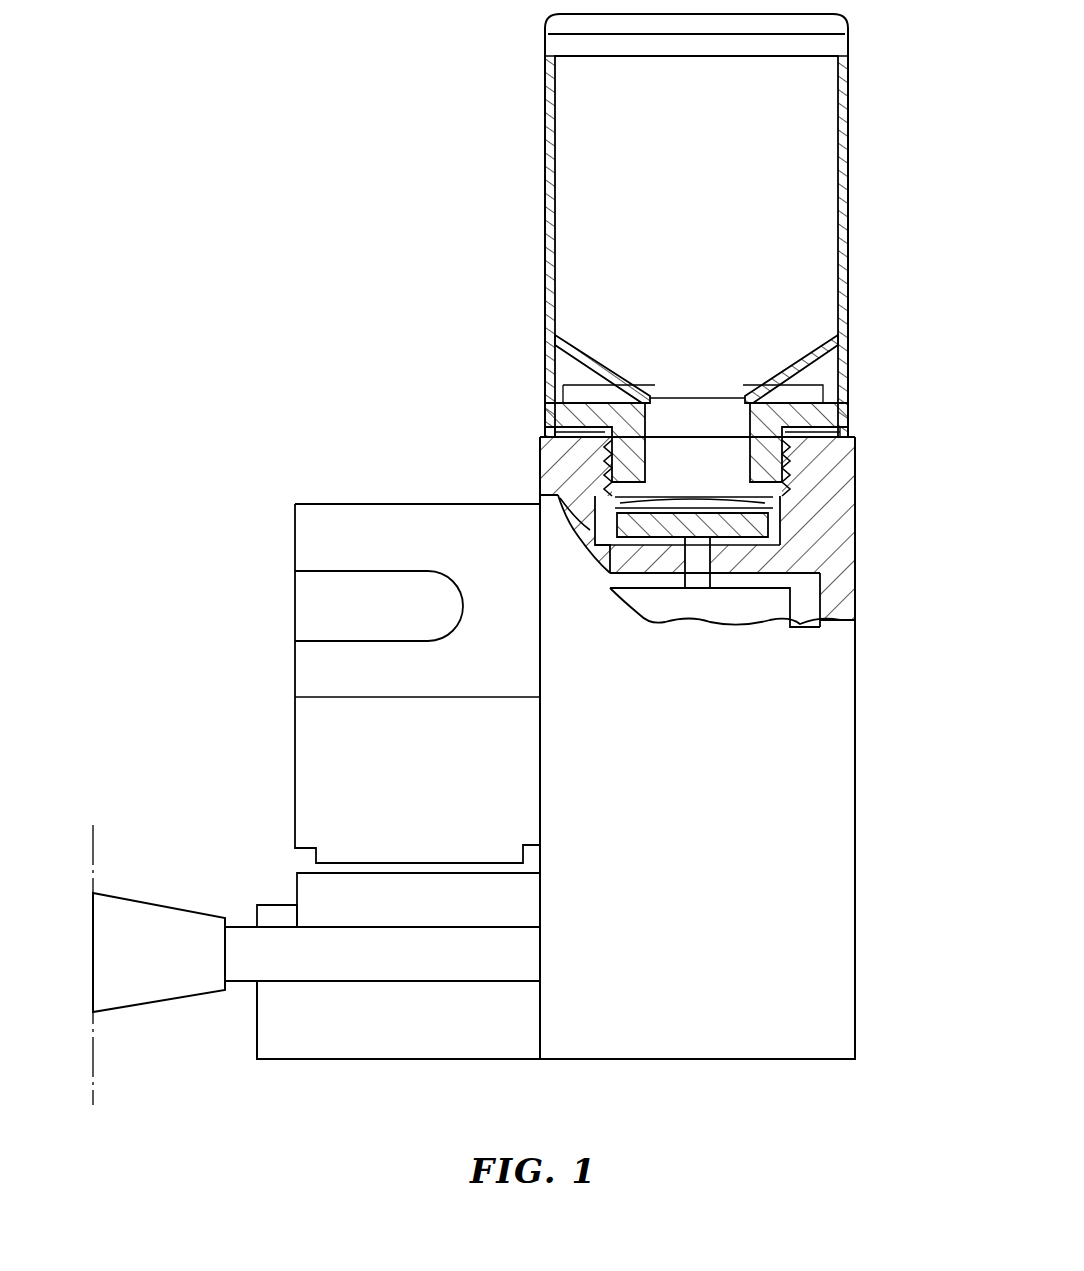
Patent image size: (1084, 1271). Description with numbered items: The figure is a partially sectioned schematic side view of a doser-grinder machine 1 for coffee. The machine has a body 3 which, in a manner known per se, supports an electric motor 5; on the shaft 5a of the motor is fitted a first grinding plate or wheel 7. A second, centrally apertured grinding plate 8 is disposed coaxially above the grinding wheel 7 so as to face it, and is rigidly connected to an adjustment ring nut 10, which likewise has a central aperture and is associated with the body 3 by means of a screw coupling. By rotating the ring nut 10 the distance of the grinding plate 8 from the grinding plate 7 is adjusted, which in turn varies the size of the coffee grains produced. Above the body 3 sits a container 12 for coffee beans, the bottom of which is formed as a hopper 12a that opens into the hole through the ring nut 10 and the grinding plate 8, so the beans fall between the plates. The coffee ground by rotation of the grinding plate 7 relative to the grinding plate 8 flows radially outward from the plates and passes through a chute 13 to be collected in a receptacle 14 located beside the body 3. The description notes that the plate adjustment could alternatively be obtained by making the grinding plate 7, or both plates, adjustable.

The doser-grinder machine 1 is at (323, 272).
The body 3 is at (843, 625).
The electric motor 5 is at (777, 616).
The shaft 5a is at (697, 575).
The first grinding plate or wheel 7 is at (772, 520).
The second grinding plate 8 is at (783, 502).
The adjustment ring nut 10 is at (795, 413).
The container 12 is at (850, 172).
The hopper 12a is at (568, 320).
The chute 13 is at (585, 518).
The receptacle 14 is at (310, 537).